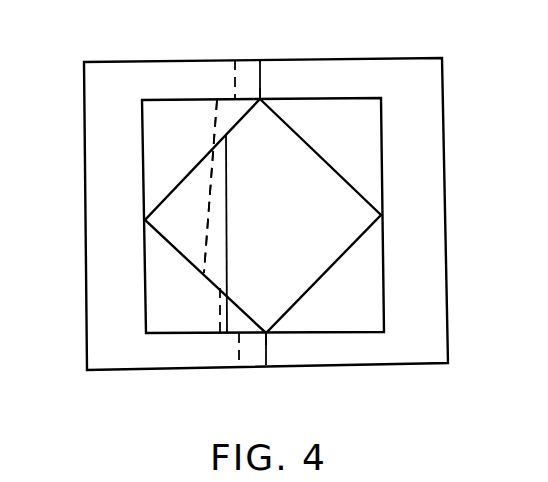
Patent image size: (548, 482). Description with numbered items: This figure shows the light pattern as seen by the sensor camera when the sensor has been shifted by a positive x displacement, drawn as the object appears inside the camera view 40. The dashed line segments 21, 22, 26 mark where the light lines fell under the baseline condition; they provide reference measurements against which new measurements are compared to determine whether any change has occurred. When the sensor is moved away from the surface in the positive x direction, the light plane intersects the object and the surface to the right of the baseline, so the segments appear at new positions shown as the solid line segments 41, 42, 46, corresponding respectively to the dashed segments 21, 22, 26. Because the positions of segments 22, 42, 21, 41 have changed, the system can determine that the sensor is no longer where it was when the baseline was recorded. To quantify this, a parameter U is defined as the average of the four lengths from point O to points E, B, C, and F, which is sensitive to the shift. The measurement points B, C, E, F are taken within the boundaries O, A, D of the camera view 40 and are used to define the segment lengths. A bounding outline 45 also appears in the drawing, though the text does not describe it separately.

The camera view 40 is at (446, 231).
The inner frame / sensing coil boundary 45 is at (382, 170).
The solid line segment 42 is at (227, 210).
The dashed line segment 22 is at (205, 225).
The dashed line segment 21 is at (217, 121).
The dashed line segment 26 is at (235, 88).
The solid line segment 46 is at (261, 83).
The solid line segment 41 is at (258, 103).
The boundary point A is at (261, 60).
The measurement point B is at (228, 142).
The measurement point C is at (228, 292).
The boundary point D is at (267, 366).
The measurement point E is at (259, 99).
The measurement point F is at (248, 333).
The boundary point O is at (85, 221).